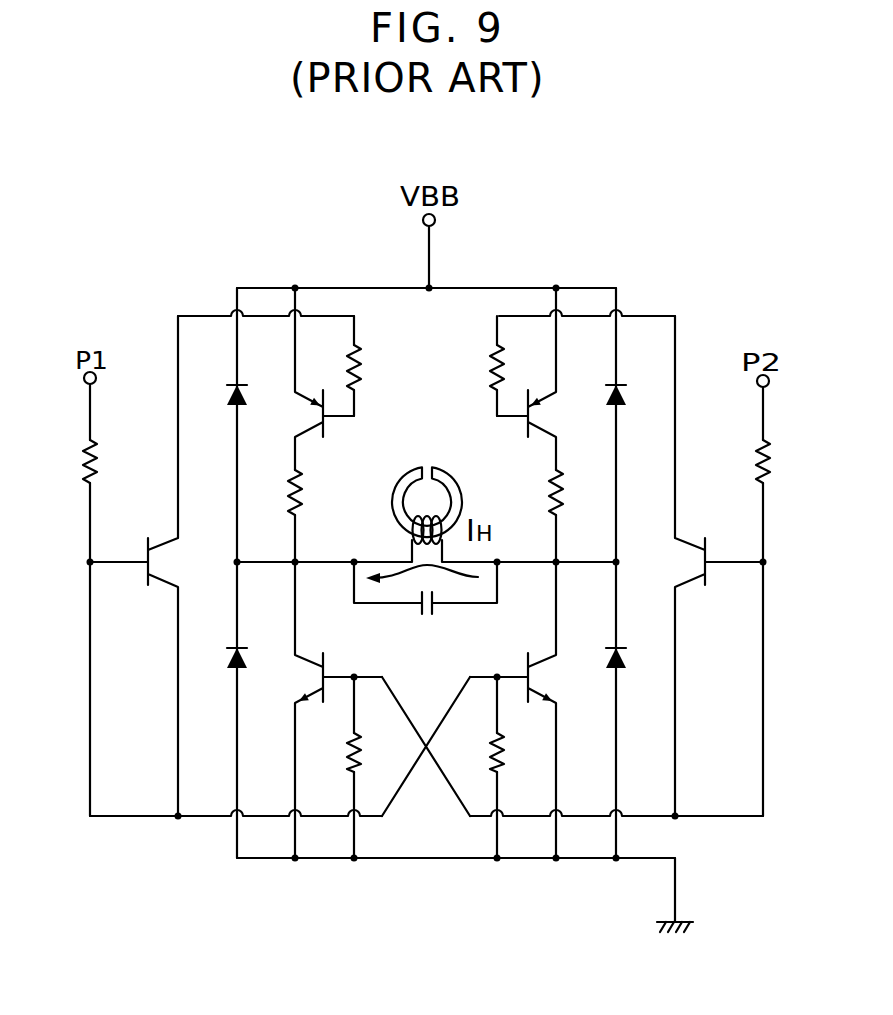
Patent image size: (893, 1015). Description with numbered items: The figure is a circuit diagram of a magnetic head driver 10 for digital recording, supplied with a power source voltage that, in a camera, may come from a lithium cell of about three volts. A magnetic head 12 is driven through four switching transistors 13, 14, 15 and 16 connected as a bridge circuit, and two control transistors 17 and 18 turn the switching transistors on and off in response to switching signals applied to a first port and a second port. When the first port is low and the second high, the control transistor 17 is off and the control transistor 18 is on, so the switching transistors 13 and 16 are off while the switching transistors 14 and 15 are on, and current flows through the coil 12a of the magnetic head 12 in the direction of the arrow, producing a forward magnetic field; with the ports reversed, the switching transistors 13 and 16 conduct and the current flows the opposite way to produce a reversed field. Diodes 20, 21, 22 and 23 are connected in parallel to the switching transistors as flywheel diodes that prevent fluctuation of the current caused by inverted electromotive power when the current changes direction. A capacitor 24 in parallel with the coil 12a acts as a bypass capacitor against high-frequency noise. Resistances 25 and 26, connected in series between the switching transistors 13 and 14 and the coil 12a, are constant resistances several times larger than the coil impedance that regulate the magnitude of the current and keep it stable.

The head driving circuit 10 is at (260, 872).
The magnetic head 12 is at (416, 461).
The coil 12a is at (430, 515).
The switching transistor 13 is at (312, 433).
The switching transistor 14 is at (539, 433).
The switching transistor 15 is at (308, 660).
The switching transistor 16 is at (543, 660).
The control transistor 17 is at (167, 542).
The control transistor 18 is at (690, 547).
The diode 20 is at (233, 406).
The diode 21 is at (620, 406).
The diode 22 is at (232, 670).
The diode 23 is at (622, 673).
The capacitor 24 is at (427, 618).
The resistance 25 is at (303, 500).
The resistance 26 is at (562, 492).